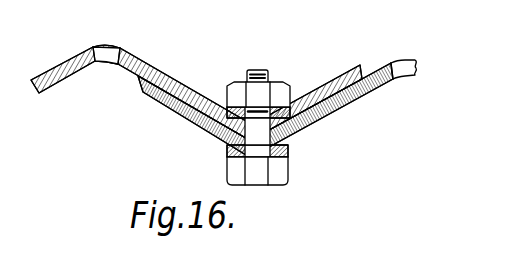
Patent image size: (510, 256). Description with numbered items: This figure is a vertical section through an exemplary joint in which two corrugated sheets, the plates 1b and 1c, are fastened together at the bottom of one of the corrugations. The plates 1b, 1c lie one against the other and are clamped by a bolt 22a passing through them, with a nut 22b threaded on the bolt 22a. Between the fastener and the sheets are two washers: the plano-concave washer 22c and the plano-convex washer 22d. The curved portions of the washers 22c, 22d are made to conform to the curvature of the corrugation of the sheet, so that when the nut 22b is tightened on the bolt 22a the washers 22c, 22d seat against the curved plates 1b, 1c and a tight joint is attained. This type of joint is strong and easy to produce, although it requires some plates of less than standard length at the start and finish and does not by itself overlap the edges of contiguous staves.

The plate 1b is at (335, 112).
The plate 1c is at (328, 81).
The bolt 22a is at (255, 148).
The nut 22b is at (233, 93).
The plano-concave washer 22c is at (289, 149).
The plano-convex washer 22d is at (277, 113).